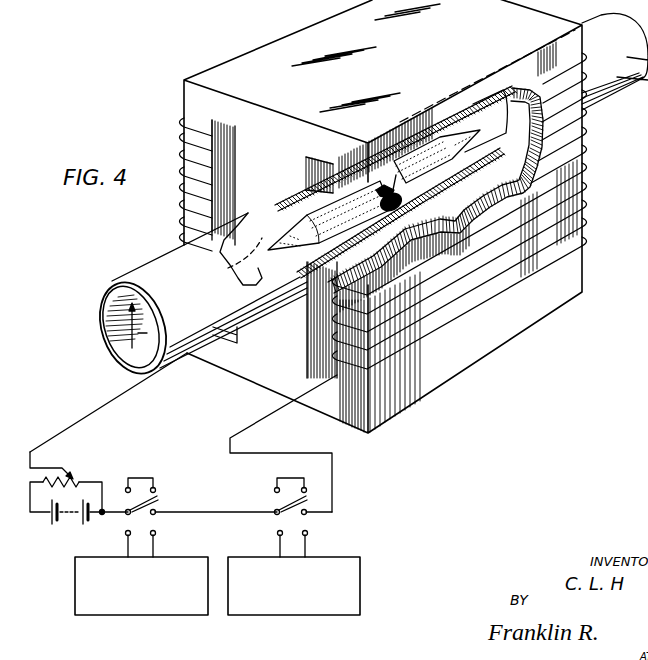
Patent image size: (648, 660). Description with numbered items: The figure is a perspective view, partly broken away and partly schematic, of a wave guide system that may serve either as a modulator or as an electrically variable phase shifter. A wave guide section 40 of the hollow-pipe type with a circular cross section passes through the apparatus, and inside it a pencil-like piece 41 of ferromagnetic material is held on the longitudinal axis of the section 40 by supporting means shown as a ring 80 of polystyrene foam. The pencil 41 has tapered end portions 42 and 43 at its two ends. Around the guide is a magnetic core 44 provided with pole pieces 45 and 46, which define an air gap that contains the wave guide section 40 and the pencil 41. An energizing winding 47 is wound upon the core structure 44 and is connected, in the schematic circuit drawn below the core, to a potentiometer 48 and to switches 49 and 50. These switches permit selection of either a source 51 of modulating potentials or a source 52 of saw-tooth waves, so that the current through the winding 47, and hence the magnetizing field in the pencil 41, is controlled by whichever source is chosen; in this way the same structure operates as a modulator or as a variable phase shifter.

The wave guide section 40 is at (245, 315).
The pencil-like piece of ferromagnetic material 41 is at (389, 191).
The tapered end portion 42 is at (294, 247).
The tapered end portion 43 is at (462, 152).
The magnetic core 44 is at (504, 331).
The pole piece 45 is at (279, 169).
The pole piece 46 is at (286, 340).
The energizing winding 47 is at (566, 253).
The potentiometer 48 is at (70, 474).
The switch 49 is at (158, 502).
The switch 50 is at (320, 500).
The source of modulating potentials 51 is at (78, 587).
The source of saw-tooth waves 52 is at (360, 595).
The ring of polystyrene foam 80 is at (386, 212).